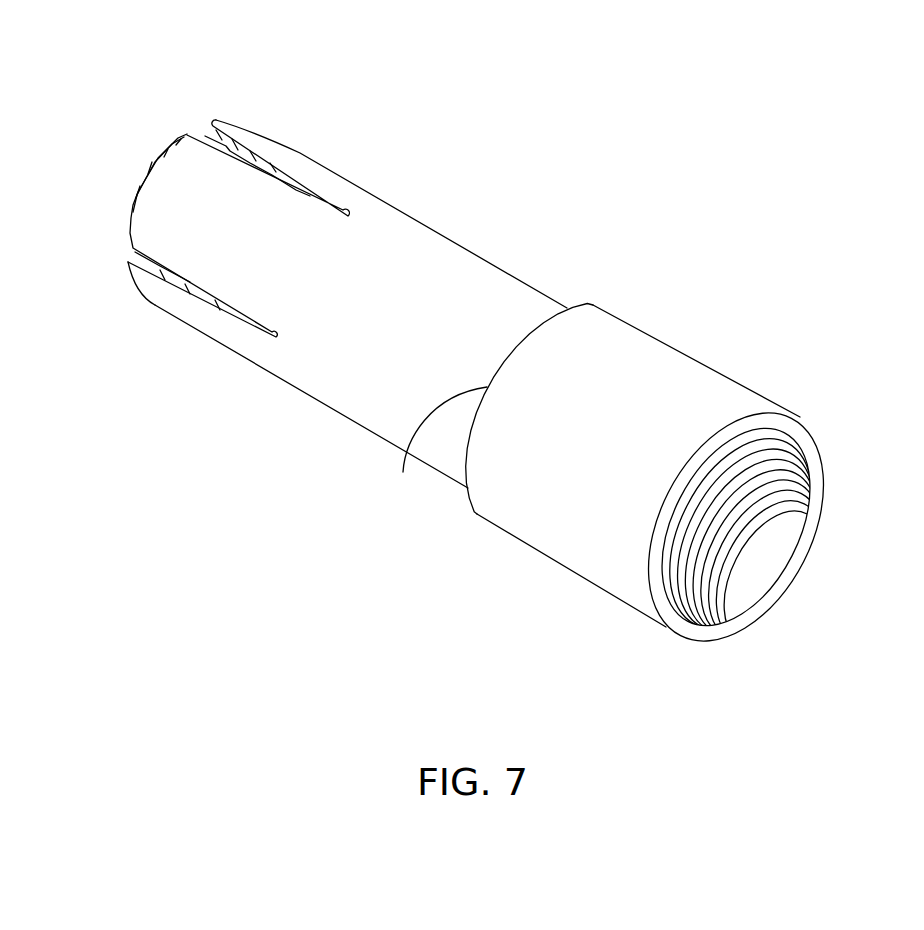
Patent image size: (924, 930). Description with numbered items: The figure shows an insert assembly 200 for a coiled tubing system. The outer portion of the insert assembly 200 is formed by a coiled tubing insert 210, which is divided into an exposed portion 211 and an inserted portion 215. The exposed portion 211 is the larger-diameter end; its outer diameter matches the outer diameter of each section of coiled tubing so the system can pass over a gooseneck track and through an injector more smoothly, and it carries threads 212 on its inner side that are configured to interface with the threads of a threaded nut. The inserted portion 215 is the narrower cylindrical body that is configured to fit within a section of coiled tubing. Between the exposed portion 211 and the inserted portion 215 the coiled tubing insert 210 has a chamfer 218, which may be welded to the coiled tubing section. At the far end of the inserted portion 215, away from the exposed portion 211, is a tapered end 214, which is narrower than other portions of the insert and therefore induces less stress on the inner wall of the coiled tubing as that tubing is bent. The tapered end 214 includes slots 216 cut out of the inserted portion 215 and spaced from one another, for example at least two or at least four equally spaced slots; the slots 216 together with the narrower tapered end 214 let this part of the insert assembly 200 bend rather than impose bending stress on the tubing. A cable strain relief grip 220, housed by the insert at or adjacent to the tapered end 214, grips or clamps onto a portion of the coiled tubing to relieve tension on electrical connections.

The insert assembly 200 is at (826, 184).
The coiled tubing insert 210 is at (543, 293).
The exposed portion 211 is at (586, 562).
The threads 212 is at (762, 562).
The tapered end 214 is at (143, 213).
The inserted portion 215 is at (340, 405).
The slots 216 is at (212, 130).
The chamfer 218 is at (403, 472).
The cable strain relief grip 220 is at (152, 162).